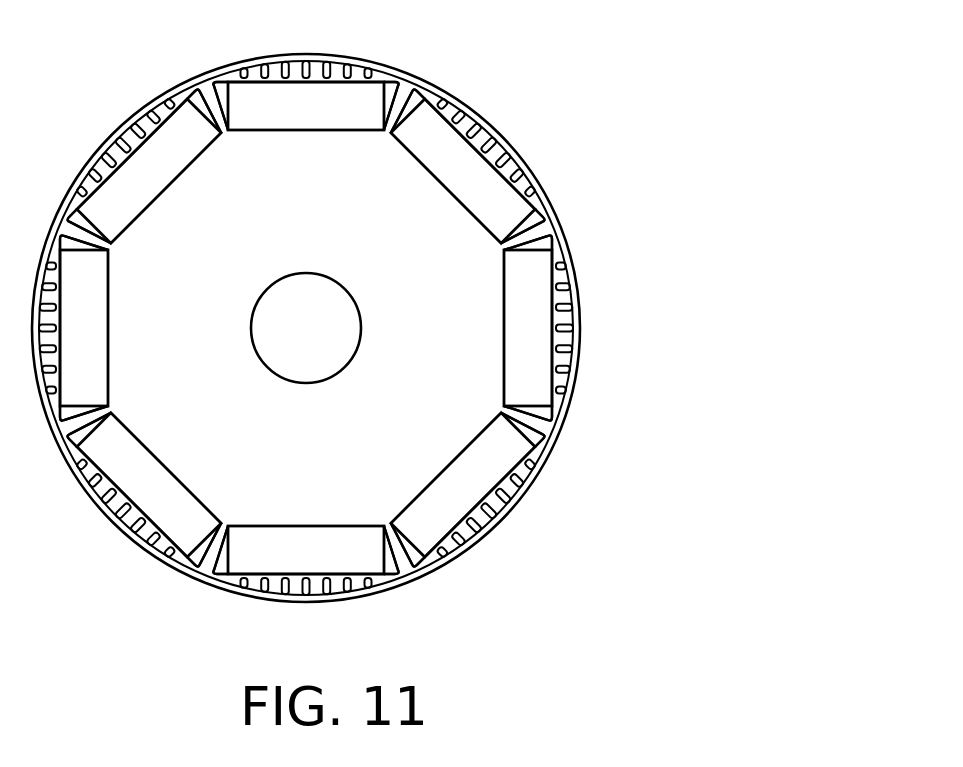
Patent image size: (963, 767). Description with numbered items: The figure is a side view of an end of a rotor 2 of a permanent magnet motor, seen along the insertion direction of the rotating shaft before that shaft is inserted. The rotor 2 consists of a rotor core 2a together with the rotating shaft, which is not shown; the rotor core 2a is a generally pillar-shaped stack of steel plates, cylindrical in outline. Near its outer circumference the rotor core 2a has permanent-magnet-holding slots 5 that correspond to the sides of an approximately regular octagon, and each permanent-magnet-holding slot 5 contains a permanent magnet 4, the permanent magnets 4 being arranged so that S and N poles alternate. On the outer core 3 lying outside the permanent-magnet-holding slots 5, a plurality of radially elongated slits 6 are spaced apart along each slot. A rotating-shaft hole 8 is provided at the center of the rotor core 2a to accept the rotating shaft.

The rotor 2 is at (595, 228).
The rotor core 2a is at (577, 424).
The outer core 3 is at (492, 127).
The permanent magnet 4 is at (163, 128).
The permanent-magnet-holding slot 5 is at (65, 213).
The slit 6 is at (467, 100).
The rotating-shaft hole 8 is at (300, 357).